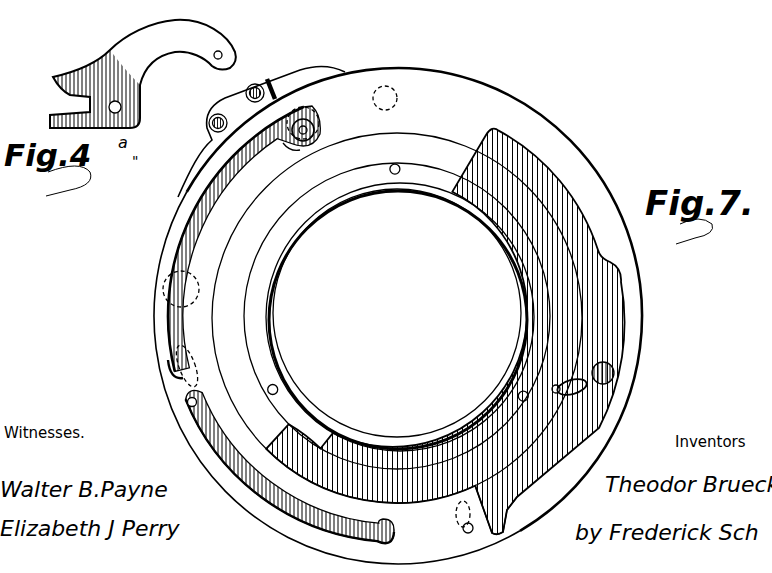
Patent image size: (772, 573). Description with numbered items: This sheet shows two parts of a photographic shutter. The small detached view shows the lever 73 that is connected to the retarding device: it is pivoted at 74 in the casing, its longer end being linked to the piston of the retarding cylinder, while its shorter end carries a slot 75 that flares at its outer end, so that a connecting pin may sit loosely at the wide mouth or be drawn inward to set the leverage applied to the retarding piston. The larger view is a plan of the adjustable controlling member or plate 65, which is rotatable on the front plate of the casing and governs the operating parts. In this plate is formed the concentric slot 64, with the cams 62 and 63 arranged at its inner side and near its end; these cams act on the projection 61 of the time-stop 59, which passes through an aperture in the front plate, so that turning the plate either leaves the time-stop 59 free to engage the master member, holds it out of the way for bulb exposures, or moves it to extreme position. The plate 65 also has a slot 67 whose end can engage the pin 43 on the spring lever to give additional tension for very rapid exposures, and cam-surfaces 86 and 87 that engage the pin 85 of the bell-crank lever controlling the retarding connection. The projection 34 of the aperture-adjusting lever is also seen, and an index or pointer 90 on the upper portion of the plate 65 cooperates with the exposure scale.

In FIG. 4a, the lever 73 is at (184, 29).
In FIG. 4a, the pivot 74 is at (116, 107).
In FIG. 4a, the slot 75 is at (65, 78).
In FIG. 7, the projection 34 is at (560, 386).
In FIG. 7, the pin 43 is at (190, 405).
In FIG. 7, the time-stop 59 is at (302, 112).
In FIG. 7, the projection 61 is at (307, 116).
In FIG. 7, the cam 62 is at (294, 147).
In FIG. 7, the cam 63 is at (263, 155).
In FIG. 7, the concentric slot 64 is at (206, 214).
In FIG. 7, the controlling member or plate 65 is at (398, 315).
In FIG. 7, the slot 67 is at (226, 474).
In FIG. 7, the pin or projection 85 is at (464, 532).
In FIG. 7, the cam-surface 86 is at (501, 531).
In FIG. 7, the cam-surface 87 is at (594, 418).
In FIG. 7, the index or pointer 90 is at (283, 80).